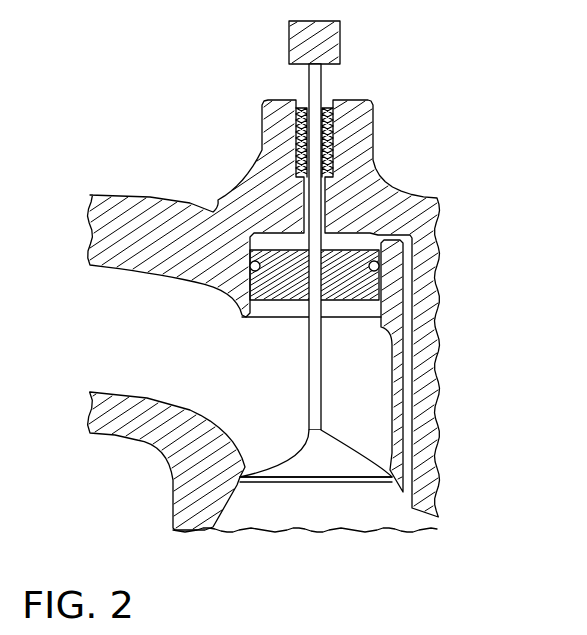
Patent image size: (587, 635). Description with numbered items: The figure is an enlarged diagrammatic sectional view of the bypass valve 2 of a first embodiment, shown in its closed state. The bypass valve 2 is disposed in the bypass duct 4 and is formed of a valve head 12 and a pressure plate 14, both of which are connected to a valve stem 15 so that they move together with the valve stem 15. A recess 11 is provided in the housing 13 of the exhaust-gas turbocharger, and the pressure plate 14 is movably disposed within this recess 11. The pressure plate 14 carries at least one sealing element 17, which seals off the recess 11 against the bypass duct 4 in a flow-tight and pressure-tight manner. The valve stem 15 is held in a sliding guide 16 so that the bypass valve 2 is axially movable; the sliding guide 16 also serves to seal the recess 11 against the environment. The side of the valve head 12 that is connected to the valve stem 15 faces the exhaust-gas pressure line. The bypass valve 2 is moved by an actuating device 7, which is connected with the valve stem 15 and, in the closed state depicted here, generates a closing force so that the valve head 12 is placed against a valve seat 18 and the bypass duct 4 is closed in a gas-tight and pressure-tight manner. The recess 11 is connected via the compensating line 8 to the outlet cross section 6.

The bypass valve 2 is at (418, 146).
The bypass duct 4 is at (263, 413).
The outlet cross section 6 is at (408, 513).
The actuating device 7 is at (326, 52).
The compensating line 8 is at (408, 363).
The recess 11 is at (352, 238).
The valve head 12 is at (302, 467).
The housing 13 is at (275, 183).
The pressure plate 14 is at (275, 265).
The valve stem 15 is at (314, 150).
The sliding guide 16 is at (303, 128).
The sealing element 17 is at (253, 267).
The valve seat 18 is at (384, 493).